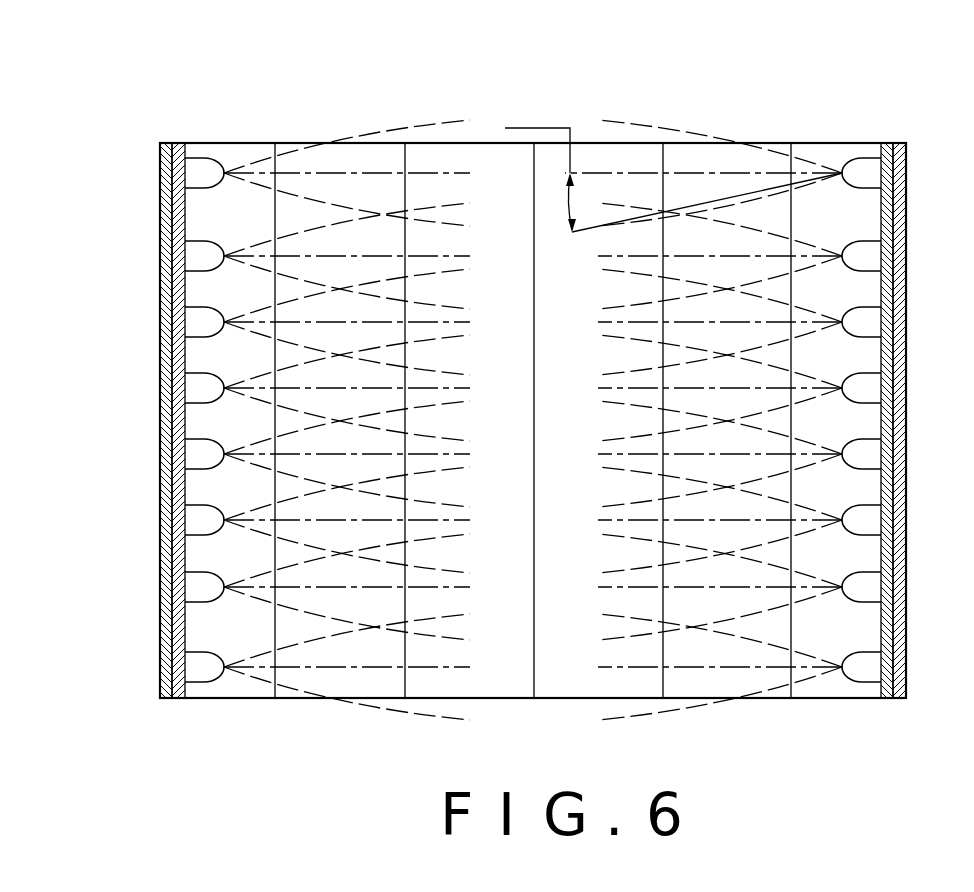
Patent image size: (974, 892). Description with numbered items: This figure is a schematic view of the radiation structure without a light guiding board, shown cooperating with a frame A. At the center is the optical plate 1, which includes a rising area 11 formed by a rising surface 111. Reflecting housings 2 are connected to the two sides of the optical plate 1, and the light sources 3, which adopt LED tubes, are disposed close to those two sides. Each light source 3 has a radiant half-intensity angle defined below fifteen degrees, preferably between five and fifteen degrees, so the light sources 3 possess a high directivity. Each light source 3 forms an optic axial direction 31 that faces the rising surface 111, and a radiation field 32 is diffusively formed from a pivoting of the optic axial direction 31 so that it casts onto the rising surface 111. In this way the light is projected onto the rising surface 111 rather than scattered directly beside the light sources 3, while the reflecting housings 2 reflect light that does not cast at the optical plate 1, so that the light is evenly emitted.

The optical plate 1 is at (745, 143).
The rising area 11 is at (632, 143).
The rising surface 111 is at (469, 216).
The reflecting housing 2 is at (171, 150).
The light source 3 is at (191, 170).
The optic axial direction 31 is at (343, 172).
The radiation field 32 is at (373, 190).
The frame A is at (163, 219).